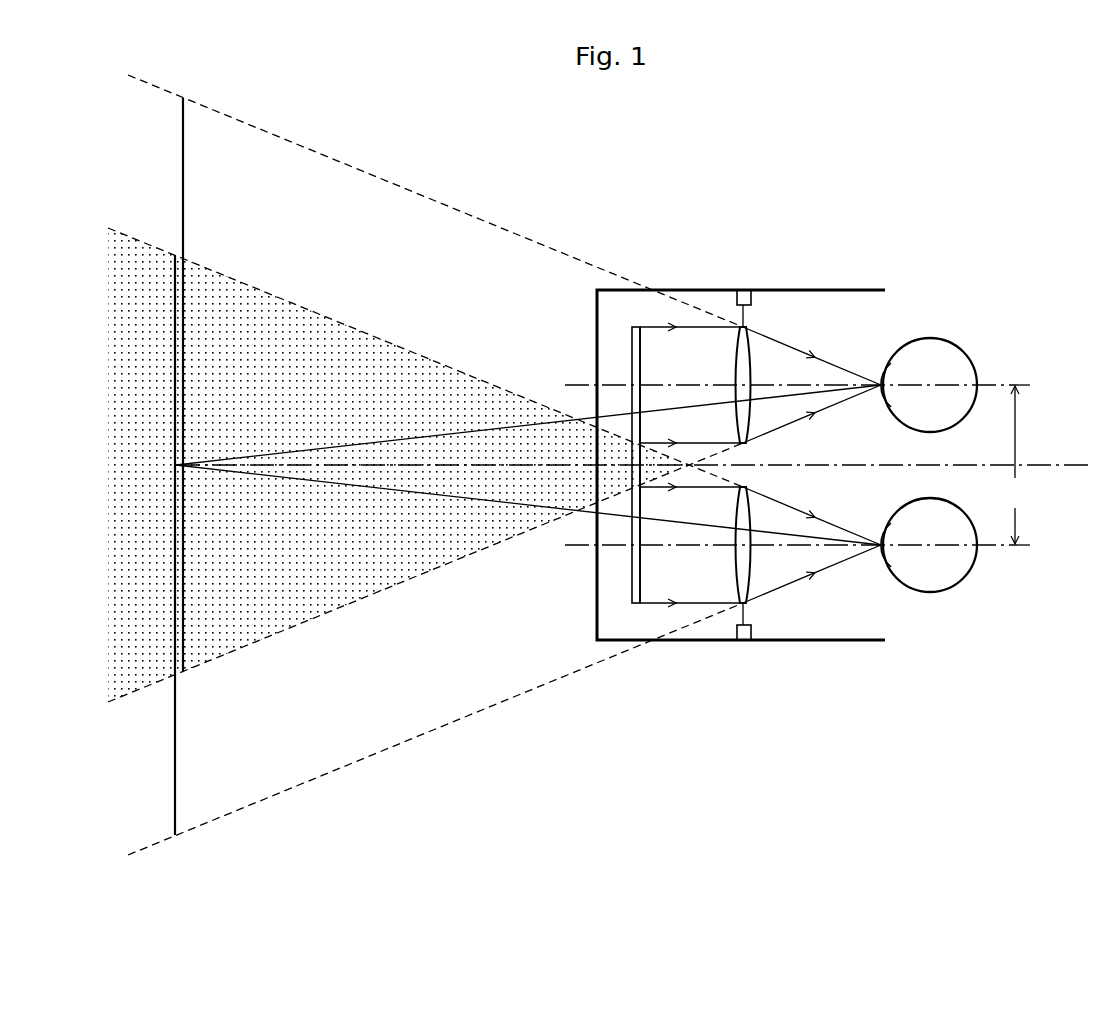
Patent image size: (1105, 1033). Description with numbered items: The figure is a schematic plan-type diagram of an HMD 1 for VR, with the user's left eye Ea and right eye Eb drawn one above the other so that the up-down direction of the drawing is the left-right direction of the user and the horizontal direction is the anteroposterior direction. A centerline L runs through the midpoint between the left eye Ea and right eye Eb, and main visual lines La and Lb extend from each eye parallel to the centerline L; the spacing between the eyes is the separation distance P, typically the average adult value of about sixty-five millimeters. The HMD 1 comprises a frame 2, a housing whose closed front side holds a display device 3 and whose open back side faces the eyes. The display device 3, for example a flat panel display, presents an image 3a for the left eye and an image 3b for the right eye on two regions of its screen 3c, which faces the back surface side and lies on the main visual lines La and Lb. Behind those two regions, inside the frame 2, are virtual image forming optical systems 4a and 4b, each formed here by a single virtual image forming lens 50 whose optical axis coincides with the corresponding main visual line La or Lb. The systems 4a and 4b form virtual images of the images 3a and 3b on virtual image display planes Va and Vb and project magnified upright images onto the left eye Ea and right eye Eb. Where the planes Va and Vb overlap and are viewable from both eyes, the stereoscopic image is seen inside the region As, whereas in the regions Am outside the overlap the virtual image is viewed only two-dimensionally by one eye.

The HMD 1 is at (652, 218).
The frame 2 is at (688, 290).
The display device 3 is at (632, 565).
The image for the left eye 3a is at (640, 573).
The image for the right eye 3b is at (640, 342).
The screen 3c is at (641, 577).
The virtual image forming optical system for the left eye 4a is at (741, 568).
The virtual image forming optical system for the right eye 4b is at (737, 360).
The virtual image forming lens 50 is at (730, 467).
The regions Am is at (369, 210).
The region As is at (210, 382).
The virtual image display plane Va is at (174, 765).
The virtual image display plane Vb is at (182, 170).
The left eye Ea is at (950, 587).
The right eye Eb is at (955, 345).
The main visual line La is at (825, 545).
The main visual line Lb is at (825, 385).
The centerline L is at (1067, 465).
The separation distance P is at (1014, 465).